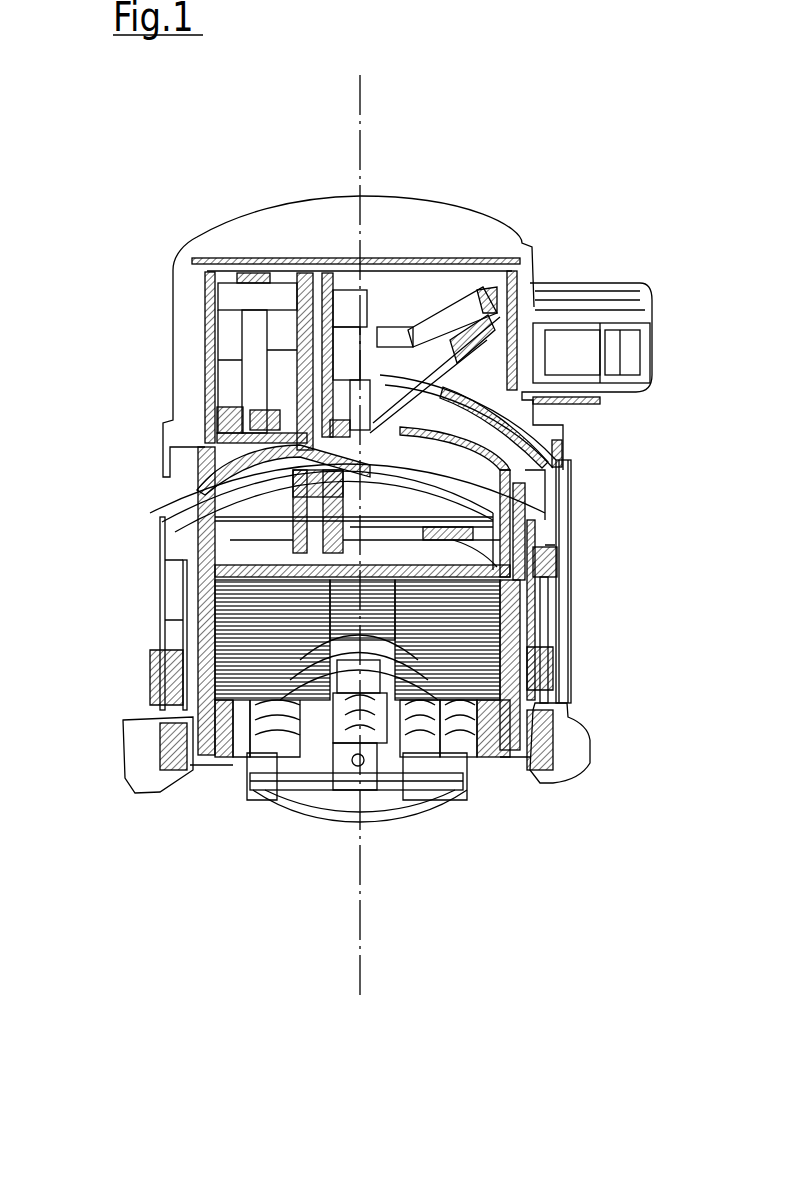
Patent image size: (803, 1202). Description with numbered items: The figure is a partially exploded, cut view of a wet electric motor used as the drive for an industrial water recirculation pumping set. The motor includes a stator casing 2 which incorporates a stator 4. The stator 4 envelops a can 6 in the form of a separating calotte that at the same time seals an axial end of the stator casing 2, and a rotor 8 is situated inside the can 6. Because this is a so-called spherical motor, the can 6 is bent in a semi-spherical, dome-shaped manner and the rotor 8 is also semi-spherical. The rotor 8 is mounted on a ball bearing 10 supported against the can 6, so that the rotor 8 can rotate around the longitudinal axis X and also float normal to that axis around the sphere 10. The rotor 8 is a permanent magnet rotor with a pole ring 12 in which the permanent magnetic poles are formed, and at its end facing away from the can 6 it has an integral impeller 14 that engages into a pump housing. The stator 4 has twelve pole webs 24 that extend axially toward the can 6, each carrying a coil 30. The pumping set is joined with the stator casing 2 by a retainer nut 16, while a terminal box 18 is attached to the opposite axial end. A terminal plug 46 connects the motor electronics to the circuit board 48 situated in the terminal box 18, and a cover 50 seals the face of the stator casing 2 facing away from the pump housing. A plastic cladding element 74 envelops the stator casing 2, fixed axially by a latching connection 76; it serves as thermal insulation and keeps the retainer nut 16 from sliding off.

The stator casing 2 is at (555, 700).
The stator 4 is at (555, 602).
The can 6 is at (235, 765).
The rotor 8 is at (480, 780).
The ball bearing 10 is at (330, 800).
The pole ring 12 is at (243, 760).
The impeller 14 is at (417, 812).
The retainer nut 16 is at (573, 765).
The terminal box 18 is at (432, 222).
The pole webs 24 is at (540, 750).
The coil 30 is at (165, 718).
The terminal plug 46 is at (300, 490).
The circuit board 48 is at (215, 330).
The cover 50 is at (520, 522).
The cladding element 74 is at (520, 642).
The latching connection 76 is at (175, 582).
The longitudinal axis X is at (360, 921).